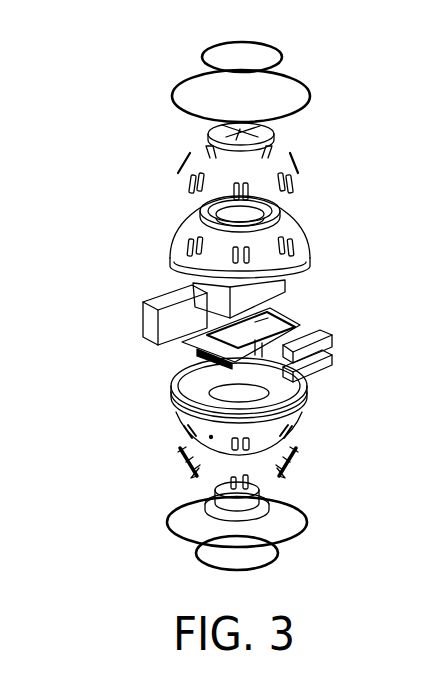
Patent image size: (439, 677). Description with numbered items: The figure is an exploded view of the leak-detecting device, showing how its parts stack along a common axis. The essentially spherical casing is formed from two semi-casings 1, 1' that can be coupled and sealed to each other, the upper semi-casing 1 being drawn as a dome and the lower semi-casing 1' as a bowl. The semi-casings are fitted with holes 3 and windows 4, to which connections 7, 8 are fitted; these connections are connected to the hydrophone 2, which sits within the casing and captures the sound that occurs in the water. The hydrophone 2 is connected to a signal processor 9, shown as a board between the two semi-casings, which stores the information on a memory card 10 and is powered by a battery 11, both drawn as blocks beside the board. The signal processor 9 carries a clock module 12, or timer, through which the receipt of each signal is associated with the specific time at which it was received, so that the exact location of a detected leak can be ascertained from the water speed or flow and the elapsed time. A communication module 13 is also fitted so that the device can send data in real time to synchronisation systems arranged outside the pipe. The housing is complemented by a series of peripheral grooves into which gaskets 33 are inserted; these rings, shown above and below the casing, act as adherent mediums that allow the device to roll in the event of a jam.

The semi-casing 1 is at (276, 228).
The semi-casing 1' is at (172, 406).
The hydrophone 2 is at (195, 298).
The holes 3 is at (205, 208).
The windows 4 is at (293, 247).
The connection 7 is at (273, 133).
The connection 8 is at (297, 178).
The signal processor 9 is at (180, 342).
The memory card 10 is at (333, 363).
The battery 11 is at (150, 315).
The clock module 12 is at (268, 315).
The communication module 13 is at (332, 340).
The gaskets 33 is at (177, 95).